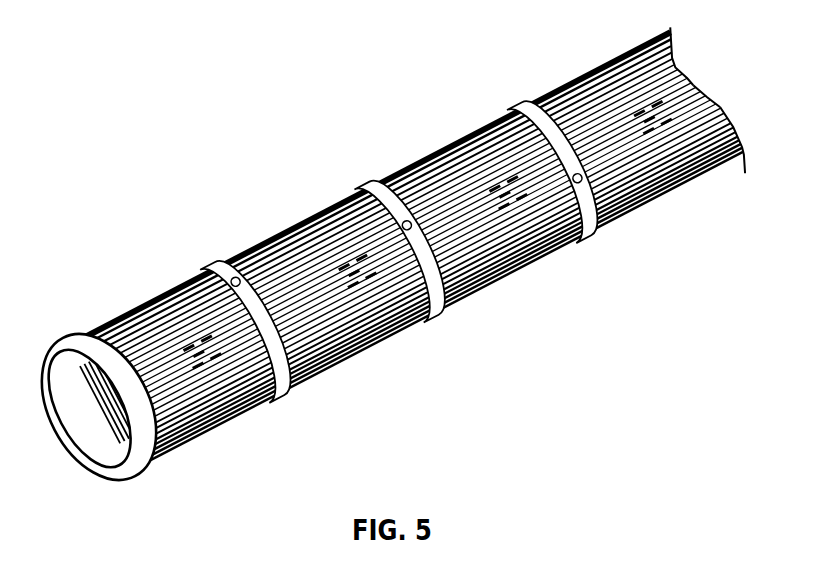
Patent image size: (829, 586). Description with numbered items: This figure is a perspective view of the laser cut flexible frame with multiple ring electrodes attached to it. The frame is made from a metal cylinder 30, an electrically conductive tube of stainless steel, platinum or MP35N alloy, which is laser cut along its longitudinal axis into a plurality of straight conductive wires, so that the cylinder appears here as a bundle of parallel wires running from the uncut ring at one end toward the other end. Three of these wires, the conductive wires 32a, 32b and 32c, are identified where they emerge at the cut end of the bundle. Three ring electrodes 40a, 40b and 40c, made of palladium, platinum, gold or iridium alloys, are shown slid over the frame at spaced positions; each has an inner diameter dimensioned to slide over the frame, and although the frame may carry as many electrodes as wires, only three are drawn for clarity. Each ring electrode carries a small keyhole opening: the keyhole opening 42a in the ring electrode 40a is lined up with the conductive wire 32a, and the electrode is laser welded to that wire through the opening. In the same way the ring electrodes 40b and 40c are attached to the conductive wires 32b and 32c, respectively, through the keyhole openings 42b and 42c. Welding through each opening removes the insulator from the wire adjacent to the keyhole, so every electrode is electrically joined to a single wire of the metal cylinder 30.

The metal cylinder 30 is at (145, 446).
The conductive wire 32a is at (651, 46).
The conductive wire 32b is at (695, 88).
The conductive wire 32c is at (712, 100).
The ring electrode 40a is at (288, 393).
The ring electrode 40b is at (428, 310).
The ring electrode 40c is at (597, 232).
The keyhole opening 42a is at (232, 274).
The keyhole opening 42b is at (383, 192).
The keyhole opening 42c is at (533, 103).